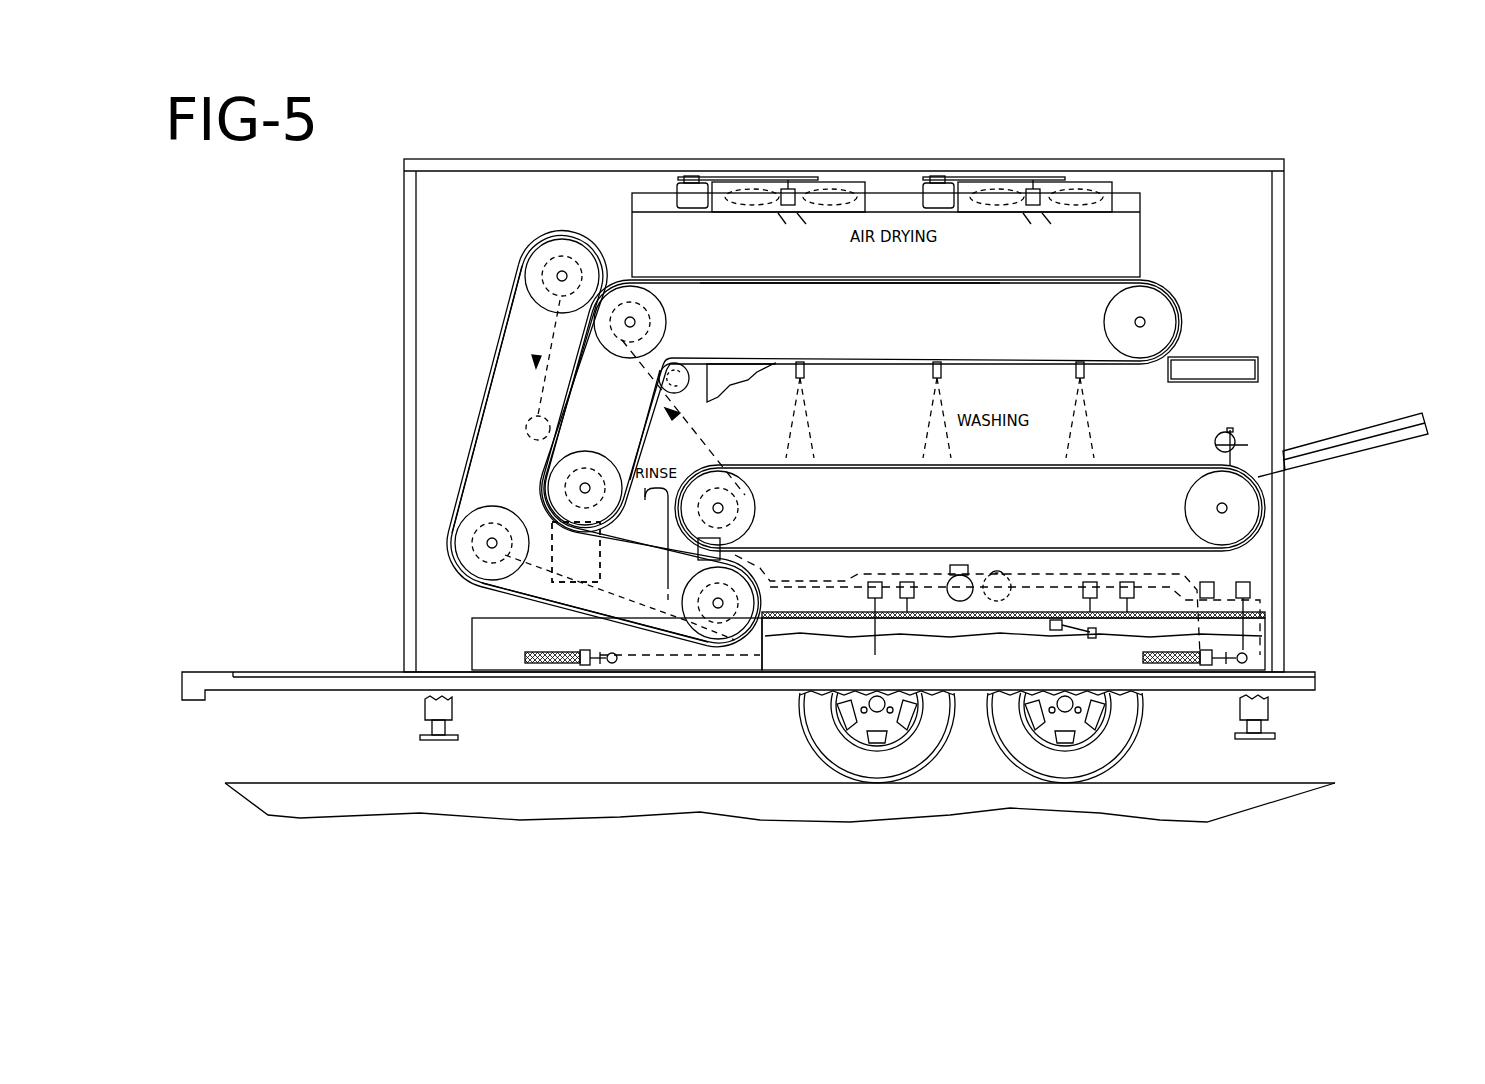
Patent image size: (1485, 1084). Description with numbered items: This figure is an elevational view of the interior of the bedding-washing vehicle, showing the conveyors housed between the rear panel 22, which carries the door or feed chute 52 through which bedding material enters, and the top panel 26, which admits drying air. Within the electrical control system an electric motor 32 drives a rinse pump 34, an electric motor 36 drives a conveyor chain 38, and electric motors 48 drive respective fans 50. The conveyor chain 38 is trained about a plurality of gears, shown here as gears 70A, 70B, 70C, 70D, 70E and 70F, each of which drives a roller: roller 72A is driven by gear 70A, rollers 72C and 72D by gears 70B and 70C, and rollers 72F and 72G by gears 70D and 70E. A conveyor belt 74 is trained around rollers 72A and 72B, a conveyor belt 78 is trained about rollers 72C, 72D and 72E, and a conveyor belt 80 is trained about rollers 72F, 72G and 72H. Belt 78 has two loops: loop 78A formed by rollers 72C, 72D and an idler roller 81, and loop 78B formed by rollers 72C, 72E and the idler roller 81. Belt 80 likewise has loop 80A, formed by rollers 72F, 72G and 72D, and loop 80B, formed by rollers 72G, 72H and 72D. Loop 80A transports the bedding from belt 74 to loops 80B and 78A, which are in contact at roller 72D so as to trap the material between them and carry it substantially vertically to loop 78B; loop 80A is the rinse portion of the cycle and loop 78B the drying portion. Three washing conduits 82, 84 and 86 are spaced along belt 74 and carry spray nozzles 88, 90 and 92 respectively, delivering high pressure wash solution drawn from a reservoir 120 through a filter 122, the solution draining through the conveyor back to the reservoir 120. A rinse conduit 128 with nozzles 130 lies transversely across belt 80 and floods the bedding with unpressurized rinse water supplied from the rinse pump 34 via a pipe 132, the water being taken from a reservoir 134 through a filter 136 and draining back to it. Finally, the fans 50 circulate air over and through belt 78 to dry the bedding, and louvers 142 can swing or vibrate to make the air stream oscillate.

The rear panel 22 is at (1278, 283).
The top panel 26 is at (1190, 158).
The electric motor 32 is at (999, 588).
The rinse pump 34 is at (962, 585).
The electric motor 36 is at (580, 552).
The conveyor chain 38 is at (702, 447).
The electric motors 48 is at (684, 190).
The fans 50 is at (762, 195).
The feed chute 52 is at (1432, 401).
The gear 70A is at (745, 506).
The gear 70B is at (628, 300).
The gear 70C is at (560, 475).
The gear 70D is at (720, 630).
The gear 70E is at (470, 565).
The gear 70F is at (562, 250).
The roller 72A is at (742, 512).
The roller 72B is at (1200, 508).
The roller 72C is at (660, 296).
The roller 72D is at (567, 465).
The roller 72E is at (1157, 320).
The roller 72F is at (736, 636).
The roller 72G is at (475, 518).
The roller 72H is at (533, 287).
The conveyor belt 74 is at (870, 463).
The conveyor belt 78 is at (1163, 287).
The loop 78A is at (630, 452).
The loop 78B is at (884, 282).
The conveyor belt 80 is at (570, 448).
The loop 80A is at (495, 596).
The loop 80B is at (490, 350).
The idler roller 81 is at (684, 378).
The washing conduit 82 is at (797, 368).
The washing conduit 84 is at (940, 372).
The washing conduit 86 is at (1078, 372).
The spray nozzles 88 is at (804, 370).
The spray nozzles 90 is at (934, 372).
The spray nozzles 92 is at (1086, 383).
The reservoir 120 is at (1140, 628).
The filter 122 is at (1168, 662).
The rinse conduit 128 is at (664, 585).
The nozzles 130 is at (640, 497).
The pipe 132 is at (888, 562).
The reservoir 134 is at (491, 662).
The filter 136 is at (566, 666).
The louvers 142 is at (1246, 422).